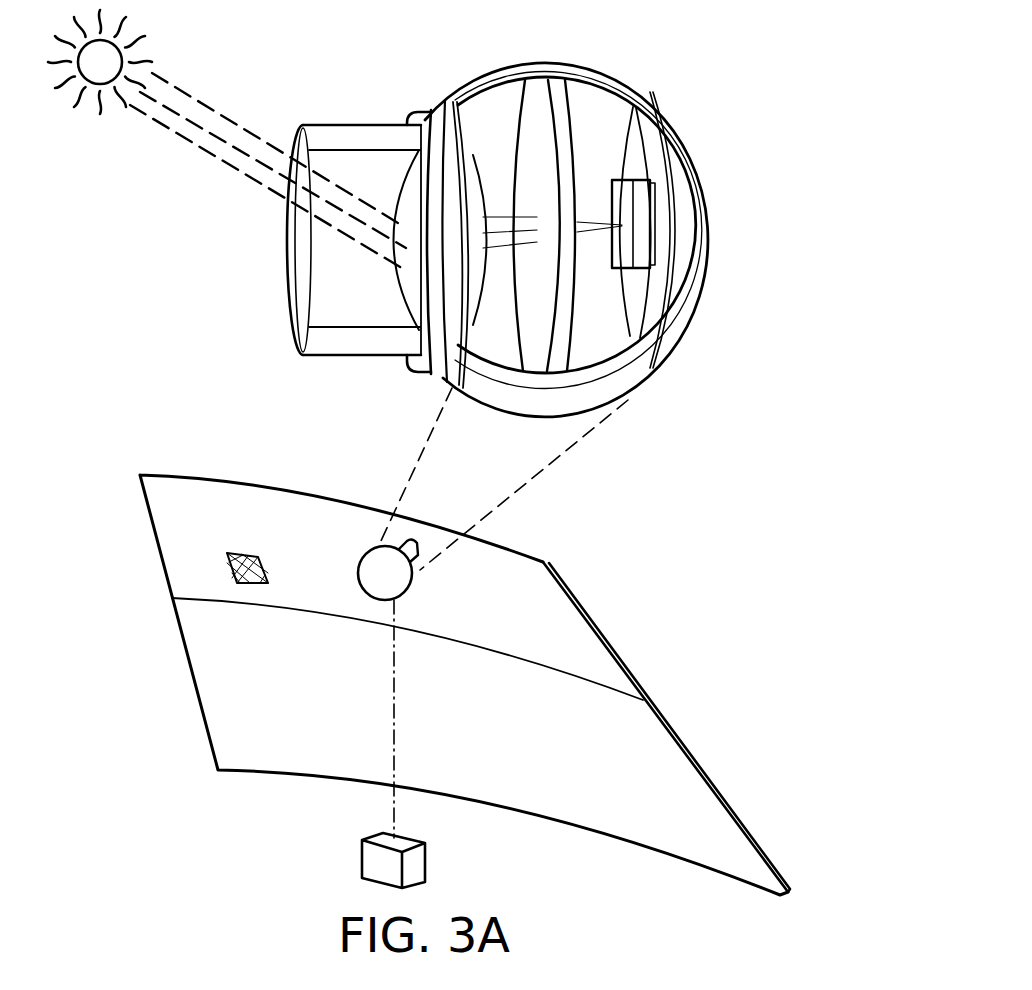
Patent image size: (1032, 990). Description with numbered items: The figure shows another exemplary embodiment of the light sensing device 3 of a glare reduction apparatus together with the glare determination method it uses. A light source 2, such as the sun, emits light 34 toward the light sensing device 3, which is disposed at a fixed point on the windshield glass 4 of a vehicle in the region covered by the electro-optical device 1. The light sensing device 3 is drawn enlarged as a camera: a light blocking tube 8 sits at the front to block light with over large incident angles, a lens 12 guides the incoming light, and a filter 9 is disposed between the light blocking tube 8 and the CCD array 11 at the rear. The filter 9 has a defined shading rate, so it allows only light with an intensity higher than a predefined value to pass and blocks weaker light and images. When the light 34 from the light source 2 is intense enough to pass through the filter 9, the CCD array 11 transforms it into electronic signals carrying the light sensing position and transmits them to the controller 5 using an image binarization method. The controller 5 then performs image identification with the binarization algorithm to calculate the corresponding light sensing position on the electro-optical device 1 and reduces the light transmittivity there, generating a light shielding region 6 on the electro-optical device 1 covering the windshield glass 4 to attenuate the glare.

The electro-optical device 1 is at (570, 627).
The light source 2 is at (113, 60).
The light sensing device 3 is at (658, 104).
The windshield glass 4 is at (682, 780).
The controller 5 is at (460, 870).
The light shielding region 6 is at (235, 552).
The light blocking tube 8 is at (366, 138).
The filter 9 is at (532, 120).
The CCD array 11 is at (623, 202).
The lens 12 is at (413, 197).
The light 34 is at (217, 153).